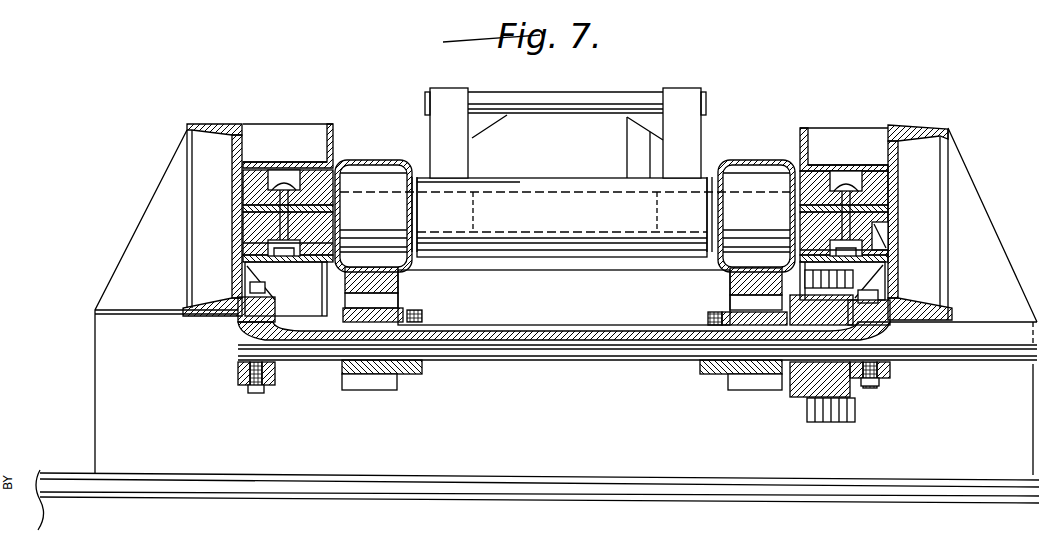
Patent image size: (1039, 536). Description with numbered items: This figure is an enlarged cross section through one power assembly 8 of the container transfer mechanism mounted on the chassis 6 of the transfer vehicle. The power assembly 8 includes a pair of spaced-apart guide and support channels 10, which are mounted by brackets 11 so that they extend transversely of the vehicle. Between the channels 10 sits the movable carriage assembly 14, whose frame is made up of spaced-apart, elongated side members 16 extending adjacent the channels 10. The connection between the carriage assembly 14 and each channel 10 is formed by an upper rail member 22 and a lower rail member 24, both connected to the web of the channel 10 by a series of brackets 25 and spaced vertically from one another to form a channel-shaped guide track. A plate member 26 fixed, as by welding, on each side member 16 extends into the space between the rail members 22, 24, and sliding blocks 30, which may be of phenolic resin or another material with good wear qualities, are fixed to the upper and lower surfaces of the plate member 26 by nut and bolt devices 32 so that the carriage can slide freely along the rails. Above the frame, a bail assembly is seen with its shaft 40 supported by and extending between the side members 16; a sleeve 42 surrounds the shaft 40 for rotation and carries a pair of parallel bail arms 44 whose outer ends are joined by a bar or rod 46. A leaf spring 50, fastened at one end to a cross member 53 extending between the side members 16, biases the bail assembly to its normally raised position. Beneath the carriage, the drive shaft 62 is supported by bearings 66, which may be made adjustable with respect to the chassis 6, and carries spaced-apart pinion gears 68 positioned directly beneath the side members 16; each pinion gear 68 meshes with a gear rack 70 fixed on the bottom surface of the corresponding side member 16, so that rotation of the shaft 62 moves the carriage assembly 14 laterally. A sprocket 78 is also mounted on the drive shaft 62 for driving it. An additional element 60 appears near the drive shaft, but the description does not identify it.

The chassis 6 is at (58, 471).
The power assembly 8 is at (977, 108).
The guide and support channel 10 is at (190, 124).
The bracket 11 is at (95, 353).
The carriage assembly 14 is at (742, 152).
The side member 16 is at (390, 160).
The upper rail member 22 is at (300, 160).
The lower rail member 24 is at (240, 243).
The bracket 25 is at (265, 135).
The plate member 26 is at (877, 216).
The sliding block 30 is at (250, 185).
The nut and bolt device 32 is at (840, 185).
The shaft 40 is at (552, 188).
The sleeve 42 is at (495, 177).
The bail arm 44 is at (428, 126).
The bar or rod 46 is at (638, 82).
The leaf spring 50 is at (630, 150).
The cross member 53 is at (558, 268).
The roller bearing 60 is at (846, 420).
The drive shaft 62 is at (567, 357).
The bearing 66 is at (245, 366).
The pinion gear 68 is at (385, 392).
The gear rack 70 is at (400, 291).
The sprocket 78 is at (815, 398).